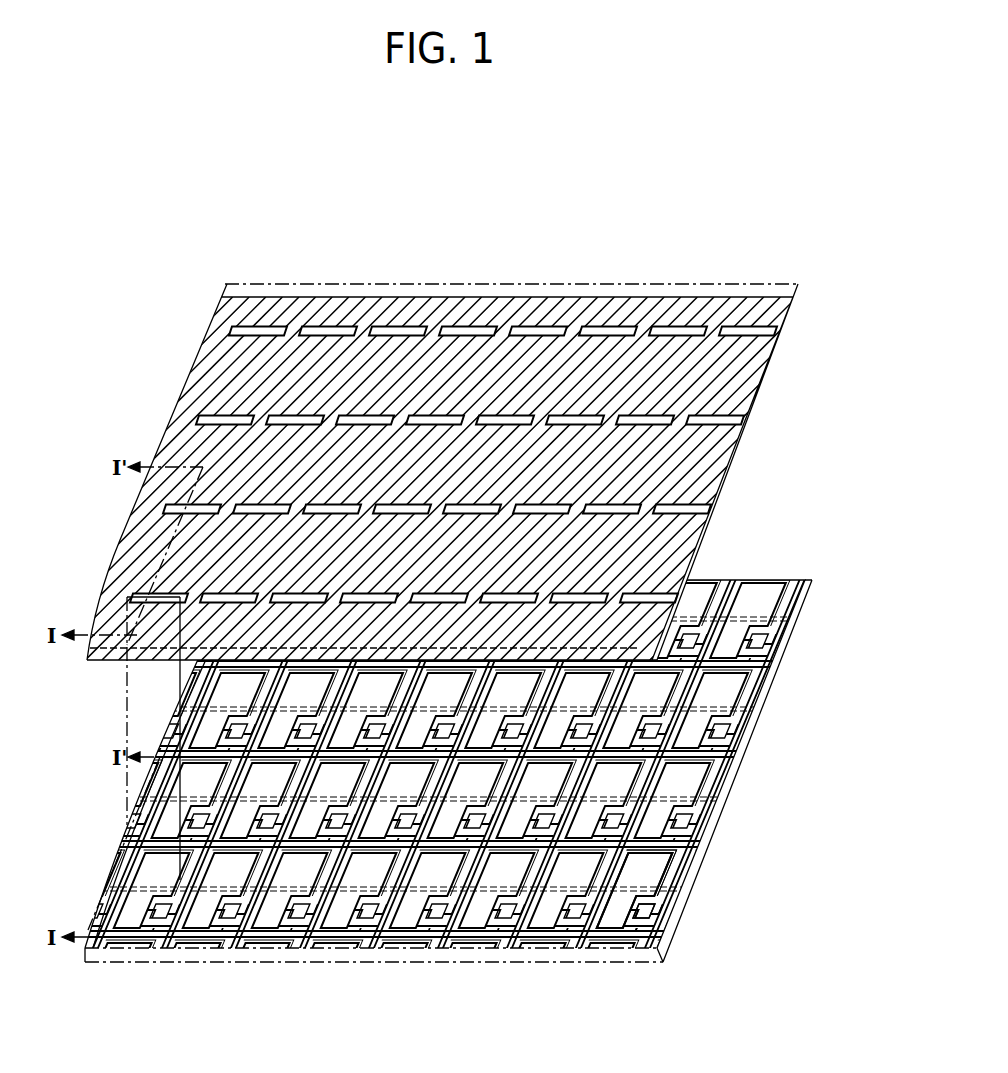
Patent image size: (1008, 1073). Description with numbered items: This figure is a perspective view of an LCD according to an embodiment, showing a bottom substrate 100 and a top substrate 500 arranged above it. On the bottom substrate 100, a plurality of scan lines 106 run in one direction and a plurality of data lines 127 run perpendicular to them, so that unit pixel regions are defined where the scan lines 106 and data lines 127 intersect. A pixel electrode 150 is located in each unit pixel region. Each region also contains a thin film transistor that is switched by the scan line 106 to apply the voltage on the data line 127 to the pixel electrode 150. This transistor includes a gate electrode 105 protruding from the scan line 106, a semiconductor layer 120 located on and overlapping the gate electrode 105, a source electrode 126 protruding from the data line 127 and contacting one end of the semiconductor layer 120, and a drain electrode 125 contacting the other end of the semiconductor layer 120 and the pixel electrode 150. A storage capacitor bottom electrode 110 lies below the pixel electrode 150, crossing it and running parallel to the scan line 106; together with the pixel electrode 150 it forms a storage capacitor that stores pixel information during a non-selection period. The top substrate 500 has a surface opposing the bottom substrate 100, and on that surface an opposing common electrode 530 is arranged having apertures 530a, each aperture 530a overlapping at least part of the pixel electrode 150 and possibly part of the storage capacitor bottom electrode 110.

The bottom substrate 100 is at (446, 796).
The gate electrode 105 is at (657, 903).
The scan line 106 is at (657, 942).
The storage capacitor bottom electrode 110 is at (693, 892).
The semiconductor layer 120 is at (727, 725).
The drain electrode 125 is at (627, 923).
The source electrode 126 is at (657, 920).
The data line 127 is at (652, 952).
The pixel electrode 150 is at (663, 865).
The top substrate 500 is at (504, 472).
The opposing common electrode 530 is at (504, 478).
The aperture 530a is at (743, 417).